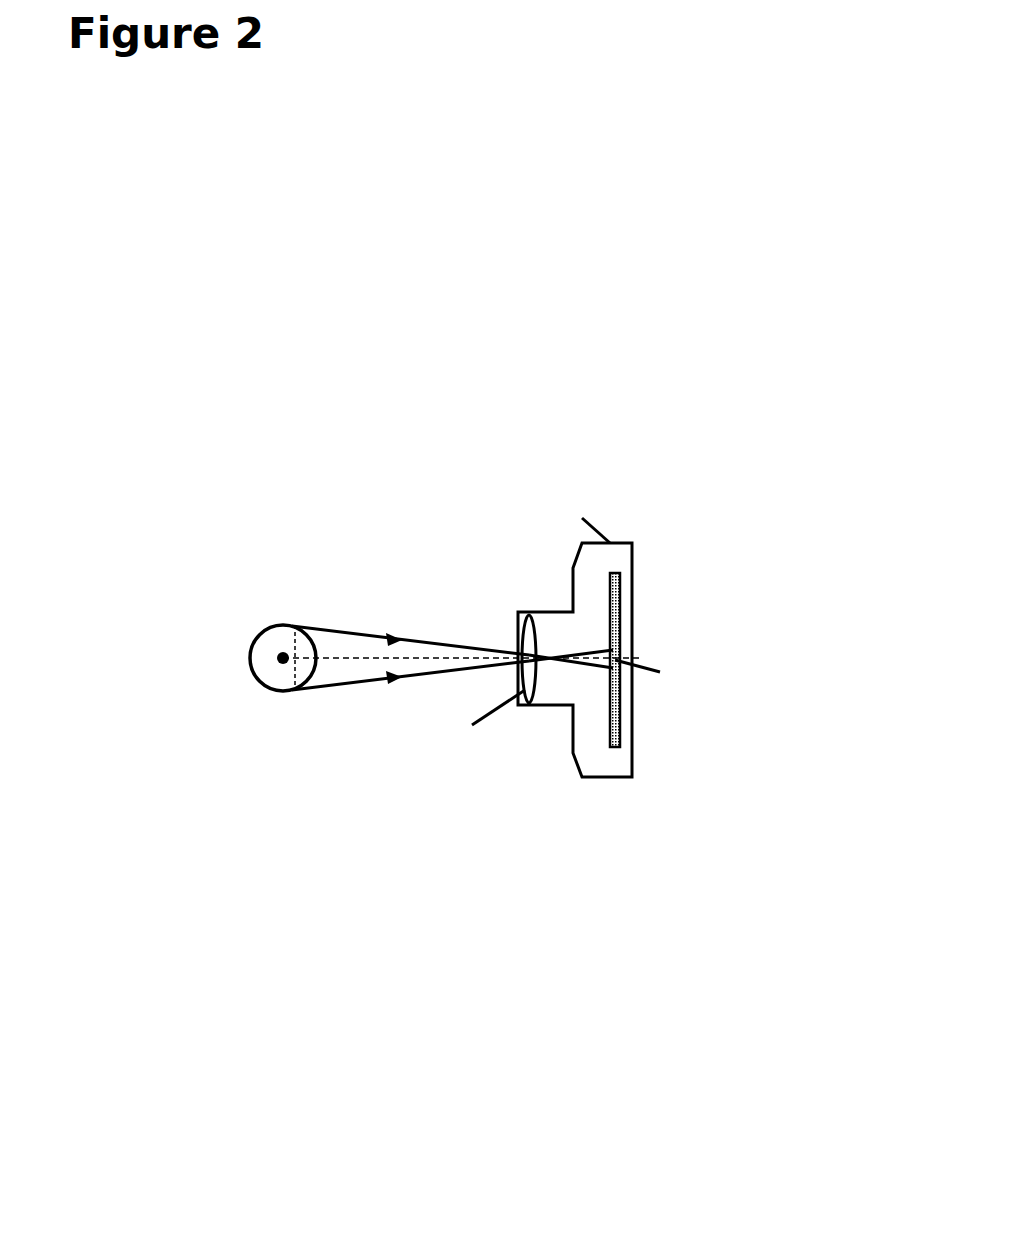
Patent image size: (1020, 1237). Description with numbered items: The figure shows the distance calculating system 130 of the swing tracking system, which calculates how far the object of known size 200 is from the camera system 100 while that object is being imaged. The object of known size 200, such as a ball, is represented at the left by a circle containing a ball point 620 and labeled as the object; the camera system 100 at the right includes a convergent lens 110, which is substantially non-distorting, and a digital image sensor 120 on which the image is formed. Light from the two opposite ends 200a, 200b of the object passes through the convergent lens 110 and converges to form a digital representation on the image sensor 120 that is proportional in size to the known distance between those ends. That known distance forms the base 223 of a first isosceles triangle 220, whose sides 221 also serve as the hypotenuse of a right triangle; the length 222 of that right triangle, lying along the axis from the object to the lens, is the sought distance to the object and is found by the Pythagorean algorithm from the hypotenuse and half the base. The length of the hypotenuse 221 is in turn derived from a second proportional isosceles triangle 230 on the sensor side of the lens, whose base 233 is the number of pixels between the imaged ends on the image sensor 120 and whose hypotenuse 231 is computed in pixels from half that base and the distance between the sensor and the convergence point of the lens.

The camera system 100 is at (623, 400).
The convergent lens 110 is at (520, 640).
The digital image sensor 120 is at (625, 603).
The distance calculating system 130 is at (338, 950).
The object of known size 200 is at (250, 658).
The first opposite end of the object 200a is at (283, 625).
The second opposite end of the object 200b is at (283, 692).
The first isosceles triangle 220 is at (349, 670).
The side (hypotenuse) of the first isosceles triangle 221 is at (350, 632).
The length of the right triangle 222 is at (415, 648).
The base of the first isosceles triangle 223 is at (258, 676).
The second proportional isosceles triangle 230 is at (590, 662).
The hypotenuse of the second proportional isosceles triangle 231 is at (553, 612).
The base of the second isosceles triangle 233 is at (545, 612).
The ball point 620 is at (277, 630).